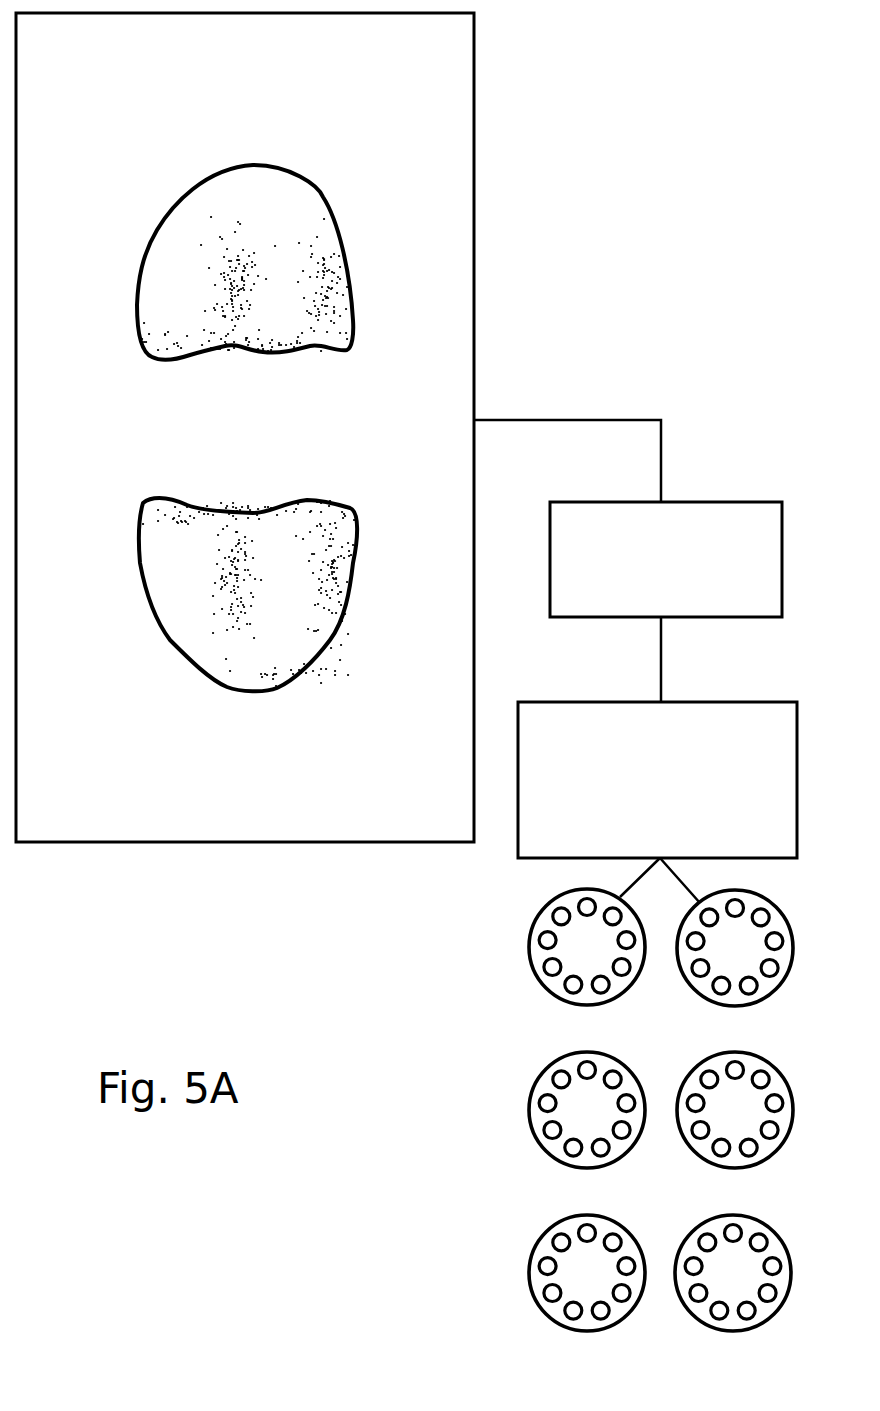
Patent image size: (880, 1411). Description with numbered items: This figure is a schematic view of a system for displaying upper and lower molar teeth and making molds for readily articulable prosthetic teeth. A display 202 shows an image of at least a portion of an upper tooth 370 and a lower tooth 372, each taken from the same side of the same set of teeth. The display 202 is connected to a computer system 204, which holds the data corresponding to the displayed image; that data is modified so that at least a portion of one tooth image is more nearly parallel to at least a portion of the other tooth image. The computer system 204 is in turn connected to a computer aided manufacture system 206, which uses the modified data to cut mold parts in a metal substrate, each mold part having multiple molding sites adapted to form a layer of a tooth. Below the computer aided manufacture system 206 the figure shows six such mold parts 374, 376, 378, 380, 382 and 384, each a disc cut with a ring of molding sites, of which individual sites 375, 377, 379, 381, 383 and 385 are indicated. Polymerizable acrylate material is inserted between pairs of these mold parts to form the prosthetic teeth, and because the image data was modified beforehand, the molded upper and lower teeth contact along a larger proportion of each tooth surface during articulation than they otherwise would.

The display 202 is at (475, 394).
The computer system 204 is at (727, 503).
The computer aided manufacture system 206 is at (737, 702).
The first tooth model 370 is at (333, 237).
The second tooth model 372 is at (353, 563).
The first disc 374 is at (553, 965).
The first disc bore 375 is at (577, 985).
The second disc 376 is at (557, 1117).
The second disc bore 377 is at (553, 1132).
The third disc 378 is at (555, 1273).
The third disc bore 379 is at (552, 1295).
The fourth disc 380 is at (730, 965).
The fourth disc bore 381 is at (746, 987).
The fifth disc 382 is at (718, 1125).
The fifth disc bore 383 is at (722, 1148).
The sixth disc 384 is at (714, 1278).
The sixth disc bore 385 is at (700, 1293).